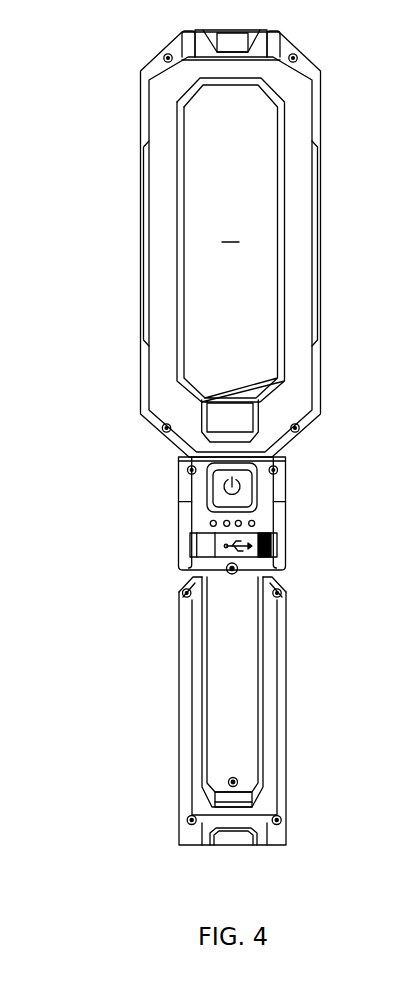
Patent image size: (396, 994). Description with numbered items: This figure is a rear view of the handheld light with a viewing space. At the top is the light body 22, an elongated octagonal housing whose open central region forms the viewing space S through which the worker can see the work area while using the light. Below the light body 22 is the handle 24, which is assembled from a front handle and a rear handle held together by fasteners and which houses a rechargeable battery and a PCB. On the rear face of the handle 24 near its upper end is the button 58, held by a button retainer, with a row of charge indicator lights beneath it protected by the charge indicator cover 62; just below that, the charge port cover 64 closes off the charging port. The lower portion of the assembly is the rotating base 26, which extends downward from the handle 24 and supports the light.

The light body 22 is at (138, 105).
The handle 24 is at (244, 679).
The rotating base 26 is at (185, 692).
The button 58 is at (223, 492).
The charge indicator cover 62 is at (253, 522).
The charge port cover 64 is at (258, 549).